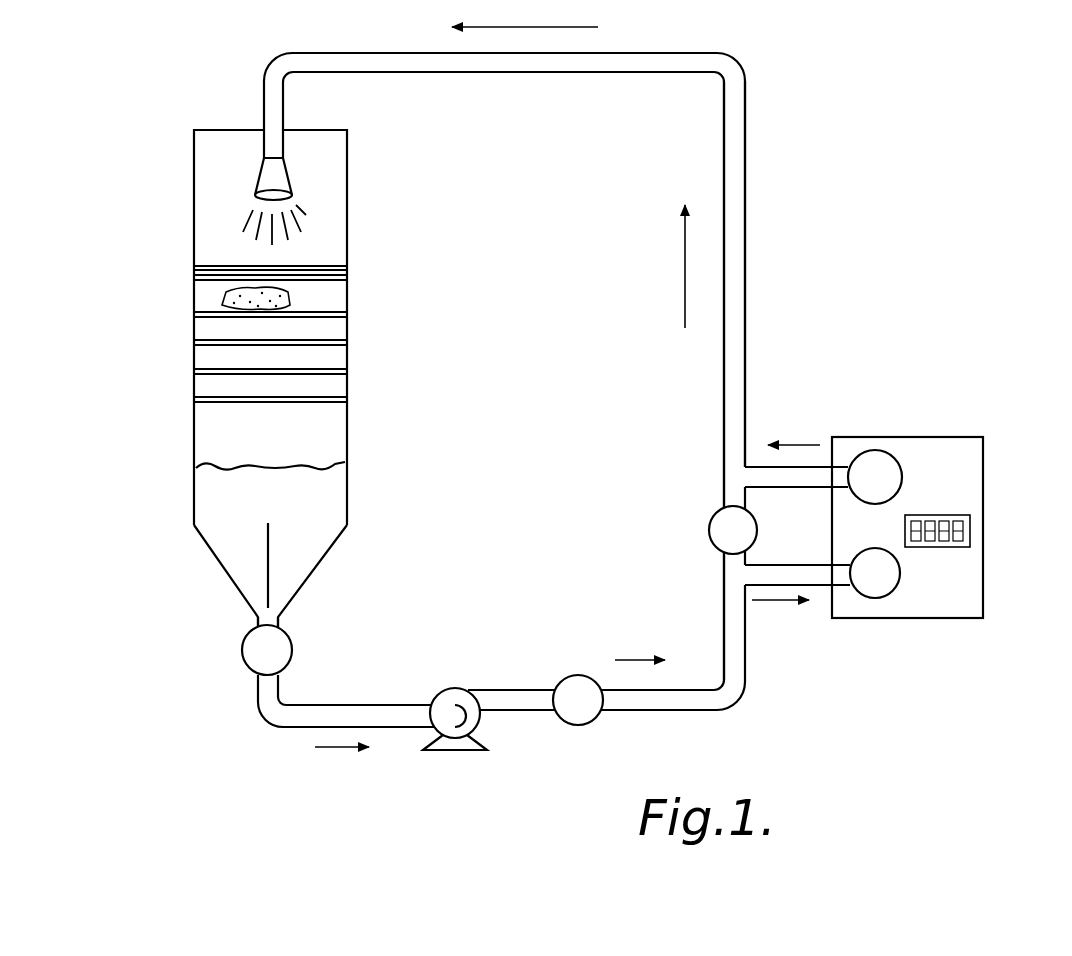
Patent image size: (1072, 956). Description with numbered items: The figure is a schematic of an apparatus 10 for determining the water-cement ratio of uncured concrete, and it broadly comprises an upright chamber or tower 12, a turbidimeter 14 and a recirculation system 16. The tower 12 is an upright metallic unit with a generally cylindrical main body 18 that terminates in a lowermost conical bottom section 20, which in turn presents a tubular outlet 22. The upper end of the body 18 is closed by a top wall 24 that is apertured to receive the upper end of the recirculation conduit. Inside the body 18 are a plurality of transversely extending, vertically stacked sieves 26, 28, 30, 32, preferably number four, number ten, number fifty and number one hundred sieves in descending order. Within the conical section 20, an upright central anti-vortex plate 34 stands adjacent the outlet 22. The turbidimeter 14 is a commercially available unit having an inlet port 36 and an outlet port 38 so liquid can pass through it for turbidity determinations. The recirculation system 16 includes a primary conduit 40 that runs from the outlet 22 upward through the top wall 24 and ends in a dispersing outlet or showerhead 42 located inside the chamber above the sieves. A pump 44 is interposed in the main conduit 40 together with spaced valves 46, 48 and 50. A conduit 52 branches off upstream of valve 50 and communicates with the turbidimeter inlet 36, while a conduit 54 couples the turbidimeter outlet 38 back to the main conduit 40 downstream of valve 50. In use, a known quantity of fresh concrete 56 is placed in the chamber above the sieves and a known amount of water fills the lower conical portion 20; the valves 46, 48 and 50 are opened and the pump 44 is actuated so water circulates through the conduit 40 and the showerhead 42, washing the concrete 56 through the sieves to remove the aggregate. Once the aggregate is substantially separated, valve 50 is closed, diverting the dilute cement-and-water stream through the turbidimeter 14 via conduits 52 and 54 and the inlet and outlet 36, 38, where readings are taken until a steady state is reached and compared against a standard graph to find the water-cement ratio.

The apparatus 10 is at (927, 87).
The tower 12 is at (407, 237).
The turbidimeter 14 is at (891, 490).
The recirculation system 16 is at (608, 387).
The main body 18 is at (345, 439).
The conical bottom section 20 is at (300, 590).
The tubular outlet 22 is at (258, 617).
The top wall 24 is at (220, 130).
The sieve 26 is at (340, 313).
The sieve 28 is at (340, 342).
The sieve 30 is at (333, 370).
The sieve 32 is at (340, 397).
The anti-vortex plate 34 is at (270, 558).
The inlet port 36 is at (875, 598).
The outlet port 38 is at (876, 452).
The primary conduit 40 is at (733, 318).
The showerhead 42 is at (287, 183).
The pump 44 is at (472, 723).
The valve 46 is at (293, 659).
The valve 48 is at (572, 681).
The valve 50 is at (709, 529).
The conduit 52 is at (797, 575).
The conduit 54 is at (787, 475).
The fresh concrete 56 is at (237, 298).